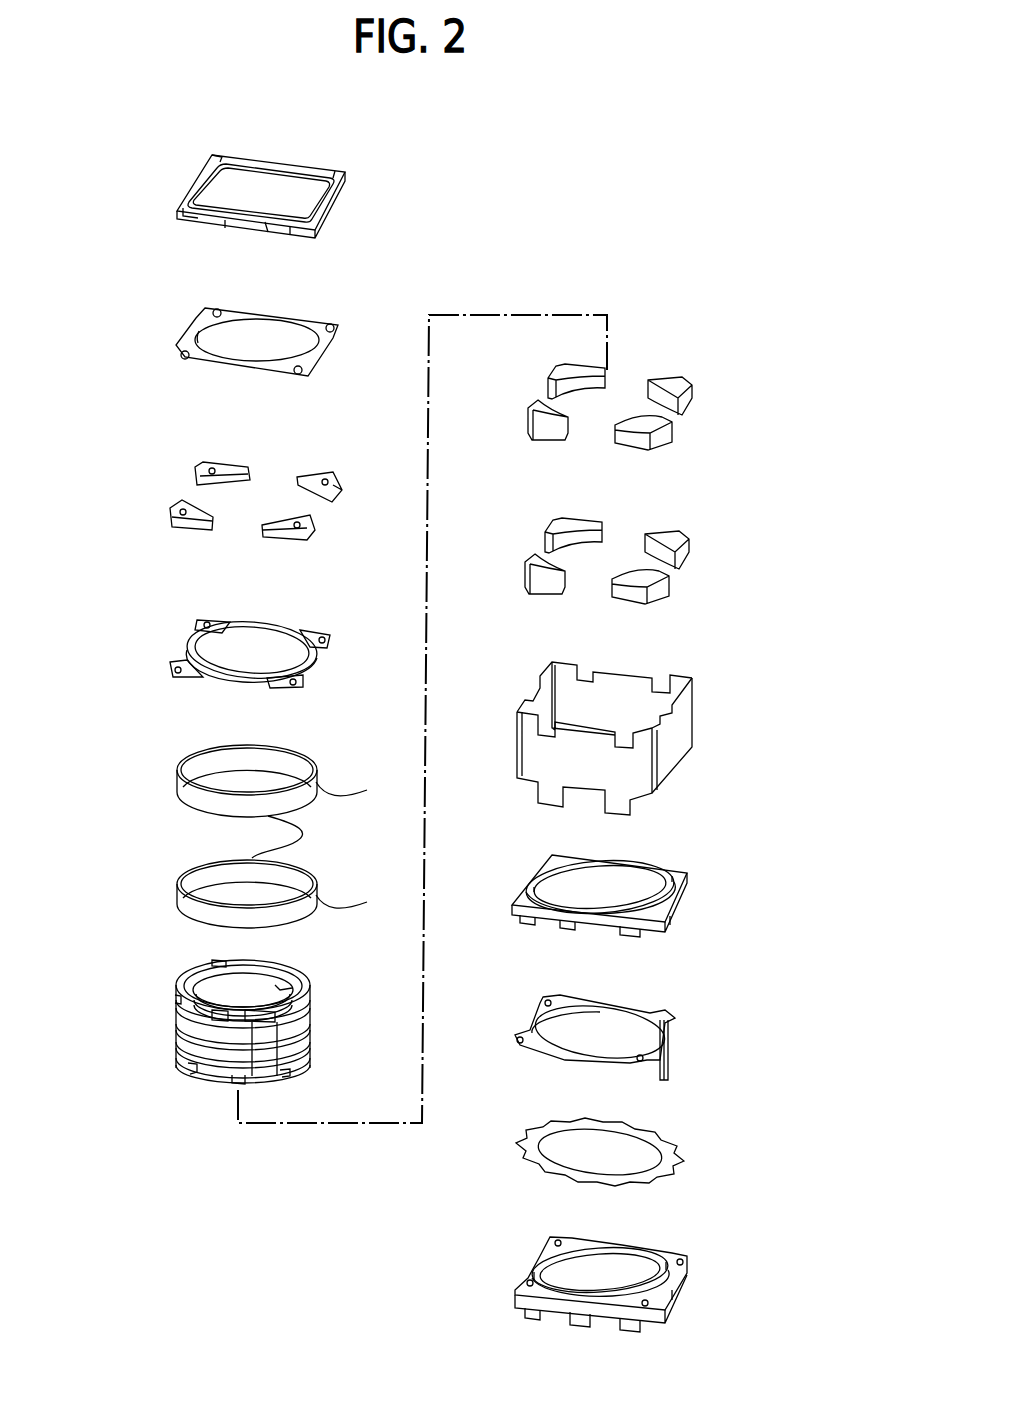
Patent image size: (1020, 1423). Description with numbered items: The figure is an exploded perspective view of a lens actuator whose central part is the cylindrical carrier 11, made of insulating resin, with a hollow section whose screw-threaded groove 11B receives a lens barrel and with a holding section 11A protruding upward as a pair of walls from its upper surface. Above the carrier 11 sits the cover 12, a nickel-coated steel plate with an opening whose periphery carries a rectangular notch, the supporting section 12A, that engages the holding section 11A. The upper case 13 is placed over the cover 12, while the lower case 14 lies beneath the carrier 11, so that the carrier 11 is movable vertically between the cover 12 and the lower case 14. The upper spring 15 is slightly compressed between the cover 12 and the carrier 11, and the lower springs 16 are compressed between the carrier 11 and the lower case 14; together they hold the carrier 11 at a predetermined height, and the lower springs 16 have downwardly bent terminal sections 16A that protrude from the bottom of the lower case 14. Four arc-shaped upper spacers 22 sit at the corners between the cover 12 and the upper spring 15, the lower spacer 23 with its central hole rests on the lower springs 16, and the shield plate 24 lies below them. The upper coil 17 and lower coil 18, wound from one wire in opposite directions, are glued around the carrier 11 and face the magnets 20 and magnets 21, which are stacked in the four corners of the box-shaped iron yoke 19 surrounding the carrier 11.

The carrier 11 is at (170, 1063).
The holding section 11A is at (215, 961).
The screw-threaded groove 11B is at (279, 988).
The cover 12 is at (337, 326).
The supporting section 12A is at (198, 335).
The upper case 13 is at (332, 202).
The lower case 14 is at (528, 1270).
The upper spring 15 is at (187, 643).
The lower springs 16 is at (580, 1053).
The terminal section 16A is at (668, 1075).
The upper coil 17 is at (180, 782).
The lower coil 18 is at (180, 884).
The yoke 19 is at (693, 690).
The magnets 20 is at (682, 378).
The magnets 21 is at (679, 532).
The upper spacers 22 is at (172, 505).
The lower spacer 23 is at (683, 872).
The shield plate 24 is at (676, 1153).